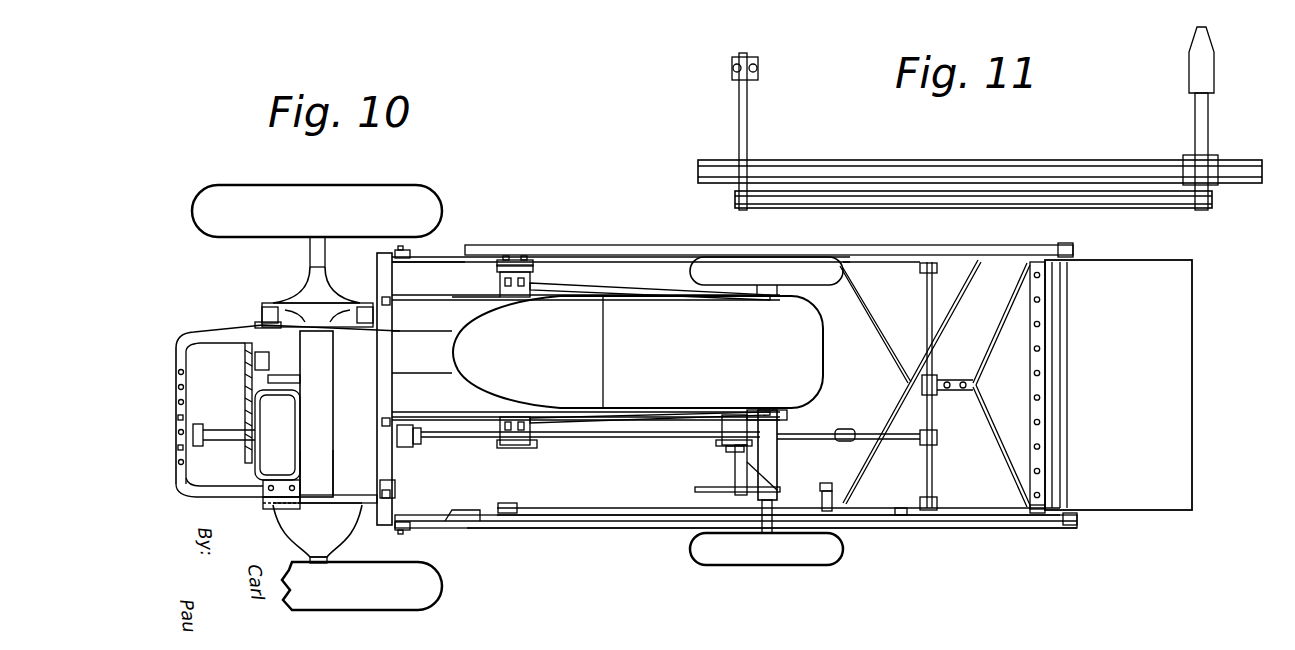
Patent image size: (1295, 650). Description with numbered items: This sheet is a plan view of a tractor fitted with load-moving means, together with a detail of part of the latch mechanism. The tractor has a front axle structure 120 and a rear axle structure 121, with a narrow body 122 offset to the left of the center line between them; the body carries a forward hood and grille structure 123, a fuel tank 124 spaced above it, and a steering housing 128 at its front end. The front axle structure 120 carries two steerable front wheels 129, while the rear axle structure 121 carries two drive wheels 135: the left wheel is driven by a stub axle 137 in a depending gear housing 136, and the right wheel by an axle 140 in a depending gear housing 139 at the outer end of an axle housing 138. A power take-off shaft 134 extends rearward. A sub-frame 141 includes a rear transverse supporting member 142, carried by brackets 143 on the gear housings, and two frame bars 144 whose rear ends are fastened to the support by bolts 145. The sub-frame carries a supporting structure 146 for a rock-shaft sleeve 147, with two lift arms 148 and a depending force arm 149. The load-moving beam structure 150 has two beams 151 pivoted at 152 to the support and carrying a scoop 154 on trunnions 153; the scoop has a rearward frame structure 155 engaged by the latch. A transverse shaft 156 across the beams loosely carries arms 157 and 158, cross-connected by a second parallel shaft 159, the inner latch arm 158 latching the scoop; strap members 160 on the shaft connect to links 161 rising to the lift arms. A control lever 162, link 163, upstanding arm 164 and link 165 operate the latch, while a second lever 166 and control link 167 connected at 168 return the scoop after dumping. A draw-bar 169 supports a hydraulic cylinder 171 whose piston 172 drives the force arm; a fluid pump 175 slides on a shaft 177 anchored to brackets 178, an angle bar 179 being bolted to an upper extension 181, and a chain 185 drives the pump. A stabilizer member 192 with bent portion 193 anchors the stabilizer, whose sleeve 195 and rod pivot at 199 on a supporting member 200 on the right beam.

In FIG. 10, the front axle structure 120 is at (787, 462).
In FIG. 10, the rear axle structure 121 is at (333, 472).
In FIG. 10, the body 122 is at (412, 374).
In FIG. 10, the hood and grille structure 123 is at (713, 352).
In FIG. 10, the fuel tank 124 is at (528, 352).
In FIG. 10, the housing 128 is at (790, 413).
In FIG. 10, the front wheels 129 is at (830, 286).
In FIG. 10, the power take-off shaft 134 is at (270, 360).
In FIG. 10, the drive wheels 135 is at (438, 594).
In FIG. 10, the depending gear housing 136 is at (307, 284).
In FIG. 10, the stub axle 137 is at (312, 246).
In FIG. 10, the axle housing 138 is at (333, 407).
In FIG. 10, the depending gear housing 139 is at (306, 533).
In FIG. 10, the axle 140 is at (330, 560).
In FIG. 10, the sub-frame 141 is at (467, 298).
In FIG. 10, the rear transverse supporting member 142 is at (380, 265).
In FIG. 10, the brackets 143 is at (394, 486).
In FIG. 10, the frame bars 144 is at (447, 296).
In FIG. 10, the bolts 145 is at (392, 300).
In FIG. 10, the supporting structure 146 is at (569, 284).
In FIG. 10, the sleeve 147 is at (500, 260).
In FIG. 10, the lift arms 148 is at (668, 258).
In FIG. 10, the force arm 149 is at (534, 446).
In FIG. 10, the beam structure 150 is at (652, 537).
In FIG. 10, the beams 151 is at (618, 245).
In FIG. 10, the pivot means 152 is at (405, 250).
In FIG. 10, the trunnions 153 is at (1074, 253).
In FIG. 10, the scoop 154 is at (1192, 404).
In FIG. 10, the frame structure 155 is at (996, 337).
In FIG. 10, the transverse shaft 156 is at (927, 301).
In FIG. 11, the transverse shaft 156 is at (1021, 161).
In FIG. 10, the arm 157 is at (930, 511).
In FIG. 11, the arm 157 is at (747, 115).
In FIG. 11, the latch arm 158 is at (1208, 101).
In FIG. 11, the second parallel shaft 159 is at (1110, 198).
In FIG. 10, the strap members 160 is at (928, 262).
In FIG. 10, the links 161 is at (878, 264).
In FIG. 10, the control lever 162 is at (512, 503).
In FIG. 10, the link 163 is at (580, 508).
In FIG. 10, the upstanding arm 164 is at (767, 540).
In FIG. 10, the link 165 is at (902, 516).
In FIG. 11, the link 165 is at (758, 63).
In FIG. 10, the second upstanding lever 166 is at (455, 510).
In FIG. 10, the control link 167 is at (560, 518).
In FIG. 10, the connection 168 is at (1036, 513).
In FIG. 10, the draw-bar 169 is at (176, 388).
In FIG. 10, the hydraulic cylinder 171 is at (226, 431).
In FIG. 10, the piston 172 is at (447, 440).
In FIG. 10, the fluid pump 175 is at (294, 432).
In FIG. 10, the shaft 177 is at (281, 380).
In FIG. 10, the brackets 178 is at (262, 325).
In FIG. 10, the angle bar 179 is at (283, 481).
In FIG. 10, the upper extension 181 is at (269, 508).
In FIG. 10, the chain 185 is at (245, 392).
In FIG. 10, the rearwardly extending member 192 is at (731, 450).
In FIG. 10, the rear inwardly bent portion 193 is at (730, 438).
In FIG. 10, the sleeve 195 is at (736, 476).
In FIG. 10, the pivot 199 is at (826, 483).
In FIG. 10, the supporting member 200 is at (836, 496).